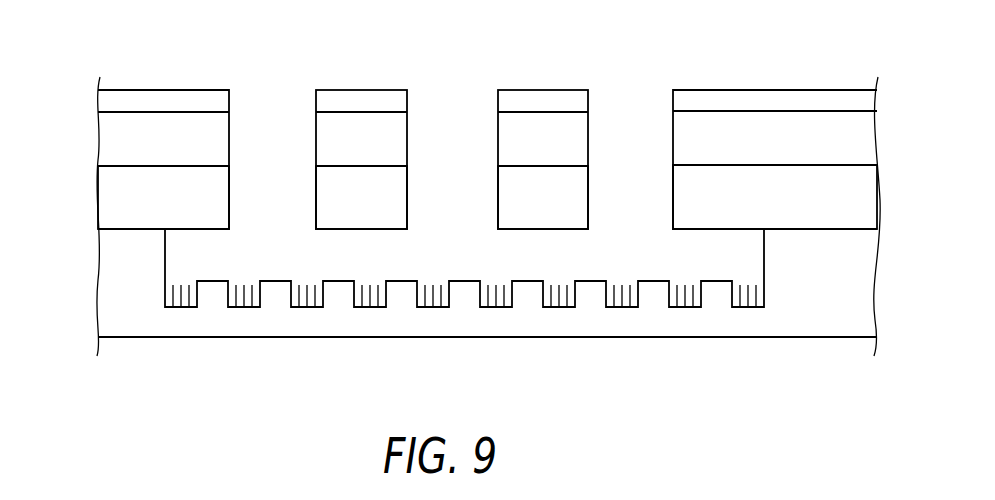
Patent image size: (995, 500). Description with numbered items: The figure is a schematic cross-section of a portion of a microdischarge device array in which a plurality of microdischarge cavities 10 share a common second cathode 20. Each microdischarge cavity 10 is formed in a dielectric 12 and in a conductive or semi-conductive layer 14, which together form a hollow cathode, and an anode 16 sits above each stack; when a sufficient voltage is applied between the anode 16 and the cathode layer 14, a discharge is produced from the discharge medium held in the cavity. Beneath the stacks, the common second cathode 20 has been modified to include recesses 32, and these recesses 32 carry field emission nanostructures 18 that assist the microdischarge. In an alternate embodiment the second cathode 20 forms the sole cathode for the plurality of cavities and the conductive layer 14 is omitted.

The microdischarge cavity 10 is at (253, 103).
The dielectric 12 is at (136, 136).
The conductive layer 14 is at (136, 198).
The anode 16 is at (161, 100).
The field emission nanostructures 18 is at (435, 276).
The second cathode 20 is at (820, 278).
The recesses 32 is at (250, 281).